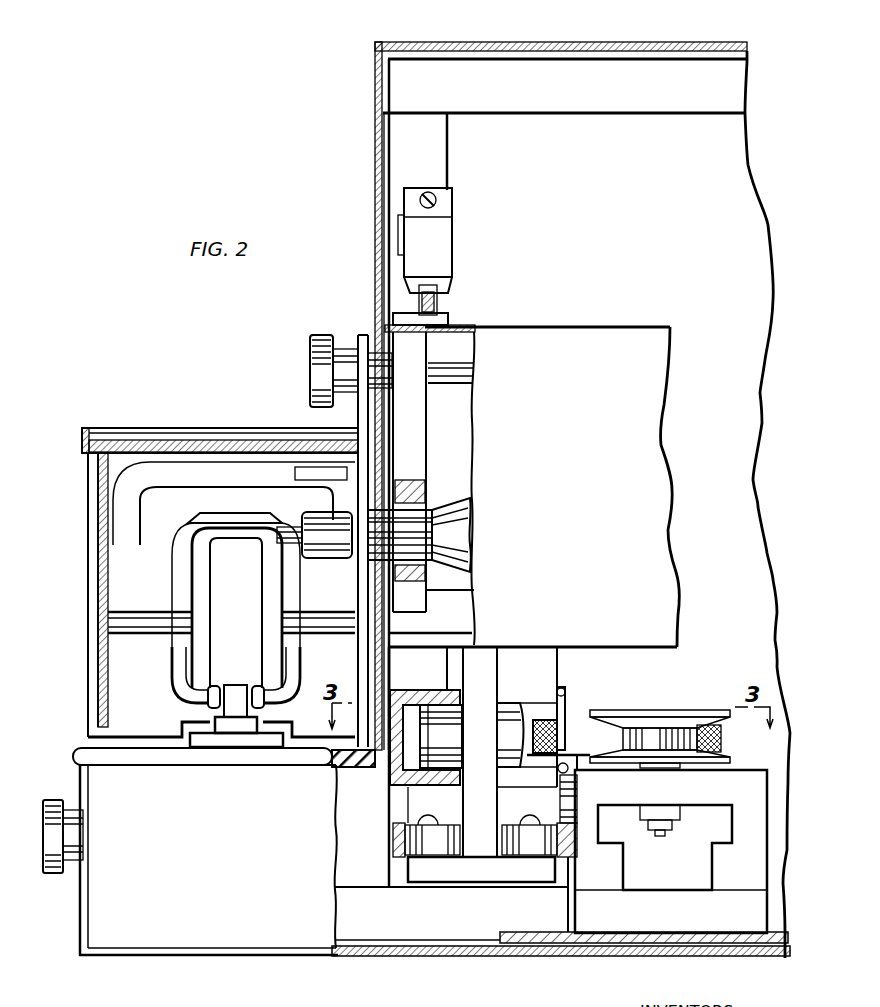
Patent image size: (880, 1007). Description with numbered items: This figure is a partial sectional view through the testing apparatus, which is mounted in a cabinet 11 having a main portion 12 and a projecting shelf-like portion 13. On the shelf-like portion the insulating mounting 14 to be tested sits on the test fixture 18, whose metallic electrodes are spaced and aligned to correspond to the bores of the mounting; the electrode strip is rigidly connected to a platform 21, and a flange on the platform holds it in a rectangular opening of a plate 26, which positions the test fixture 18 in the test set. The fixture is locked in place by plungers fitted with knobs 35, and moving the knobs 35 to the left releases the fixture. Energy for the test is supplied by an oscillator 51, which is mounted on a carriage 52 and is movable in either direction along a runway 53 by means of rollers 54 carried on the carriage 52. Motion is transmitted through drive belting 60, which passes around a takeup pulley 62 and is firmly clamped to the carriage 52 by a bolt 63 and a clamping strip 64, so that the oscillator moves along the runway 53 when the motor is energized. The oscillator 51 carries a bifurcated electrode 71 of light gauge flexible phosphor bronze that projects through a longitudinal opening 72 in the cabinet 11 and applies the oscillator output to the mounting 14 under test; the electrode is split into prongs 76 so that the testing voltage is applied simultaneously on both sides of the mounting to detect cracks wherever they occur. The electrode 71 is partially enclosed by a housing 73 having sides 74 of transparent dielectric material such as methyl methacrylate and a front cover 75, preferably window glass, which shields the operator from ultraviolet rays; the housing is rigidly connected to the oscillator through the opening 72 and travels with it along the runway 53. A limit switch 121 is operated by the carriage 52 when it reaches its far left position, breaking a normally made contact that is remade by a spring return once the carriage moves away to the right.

The cabinet 11 is at (516, 42).
The main portion 12 is at (375, 150).
The shelf-like portion 13 is at (150, 937).
The insulating mounting 14 is at (236, 690).
The test fixture 18 is at (218, 745).
The platform 21 is at (258, 745).
The plate 26 is at (88, 750).
The knob 35 is at (55, 863).
The oscillator 51 is at (581, 332).
The carriage 52 is at (478, 662).
The runway 53 is at (415, 785).
The roller 54 is at (437, 768).
The drive belting 60 is at (583, 745).
The takeup pulley 62 is at (680, 712).
The bolt 63 is at (563, 692).
The clamping strip 64 is at (566, 712).
The bifurcated electrode 71 is at (184, 530).
The longitudinal opening 72 is at (378, 563).
The housing 73 is at (360, 340).
The side 74 is at (126, 456).
The front cover 75 is at (100, 565).
The prong 76 is at (180, 660).
The limit switch 121 is at (445, 250).